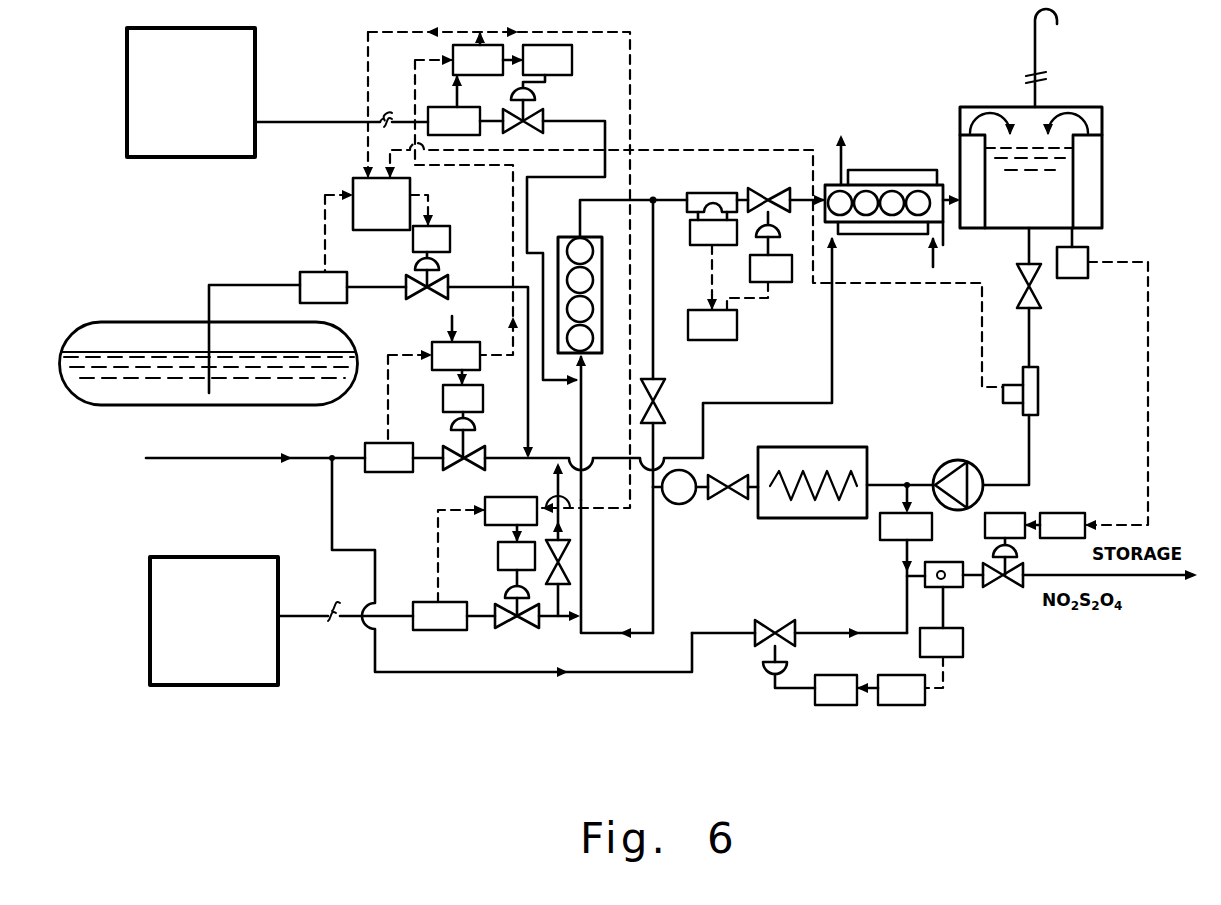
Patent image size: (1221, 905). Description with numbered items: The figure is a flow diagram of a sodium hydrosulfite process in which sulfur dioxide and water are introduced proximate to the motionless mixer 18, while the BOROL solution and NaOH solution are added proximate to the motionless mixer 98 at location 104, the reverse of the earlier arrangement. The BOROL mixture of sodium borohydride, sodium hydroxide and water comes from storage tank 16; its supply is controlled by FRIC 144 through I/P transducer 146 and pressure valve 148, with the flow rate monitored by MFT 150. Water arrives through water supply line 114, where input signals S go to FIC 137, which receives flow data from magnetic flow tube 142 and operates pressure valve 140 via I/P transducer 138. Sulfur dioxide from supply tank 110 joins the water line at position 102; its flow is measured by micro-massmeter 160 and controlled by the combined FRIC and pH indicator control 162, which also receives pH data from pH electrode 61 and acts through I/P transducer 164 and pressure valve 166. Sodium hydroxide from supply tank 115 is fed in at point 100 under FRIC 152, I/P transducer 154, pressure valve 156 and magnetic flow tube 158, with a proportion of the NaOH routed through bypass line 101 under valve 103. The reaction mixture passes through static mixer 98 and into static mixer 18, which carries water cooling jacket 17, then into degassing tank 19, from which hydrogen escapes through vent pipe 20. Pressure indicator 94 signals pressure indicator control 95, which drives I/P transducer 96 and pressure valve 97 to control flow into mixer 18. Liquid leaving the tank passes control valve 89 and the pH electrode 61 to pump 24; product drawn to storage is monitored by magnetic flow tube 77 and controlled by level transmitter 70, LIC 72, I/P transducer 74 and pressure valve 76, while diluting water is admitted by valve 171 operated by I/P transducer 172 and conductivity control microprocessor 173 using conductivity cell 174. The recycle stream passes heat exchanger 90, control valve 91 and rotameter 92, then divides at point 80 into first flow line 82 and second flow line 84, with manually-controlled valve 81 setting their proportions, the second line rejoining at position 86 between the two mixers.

The storage tank 16 is at (127, 97).
The water cooling jacket 17 is at (937, 170).
The static mixer 18 is at (867, 192).
The degassing tank 19 is at (1093, 184).
The vent pipe 20 is at (1033, 50).
The pump 24 is at (951, 455).
The pH electrode 61 is at (1038, 414).
The level transmitter 70 is at (1088, 256).
The LIC 72 is at (1068, 513).
The I/P transducer 74 is at (1006, 513).
The pressure valve 76 is at (998, 587).
The magnetic flow tube 77 is at (887, 543).
The point 80 is at (664, 493).
The manually-controlled valve 81 is at (660, 405).
The first flow line 82 is at (656, 578).
The second flow line 84 is at (656, 300).
The position 86 is at (654, 197).
The control valve 89 is at (1039, 292).
The heat exchanger 90 is at (812, 518).
The control valve 91 is at (722, 481).
The rotameter 92 is at (684, 504).
The pressure indicator 94 is at (706, 193).
The pressure indicator control 95 is at (735, 338).
The I/P transducer 96 is at (780, 282).
The pressure valve 97 is at (770, 188).
The static mixer 98 is at (567, 237).
The point 100 is at (584, 620).
The bypass line 101 is at (563, 598).
The position 102 is at (535, 460).
The valve 103 is at (570, 552).
The position 104 is at (583, 388).
The supply tank 110 is at (298, 405).
The water supply line 114 is at (243, 460).
The supply tank 115 is at (150, 635).
The FIC 137 is at (481, 368).
The I/P transducer 138 is at (483, 410).
The pressure valve 140 is at (458, 468).
The magnetic flow tube 142 is at (393, 472).
The FRIC 144 is at (484, 75).
The I/P transducer 146 is at (572, 60).
The pressure valve 148 is at (540, 113).
The MFT 150 is at (435, 107).
The FRIC 152 is at (494, 527).
The I/P transducer 154 is at (498, 566).
The pressure valve 156 is at (505, 625).
The magnetic flow tube 158 is at (438, 630).
The micro-massmeter 160 is at (347, 280).
The combined FRIC and pH indicator control 162 is at (353, 184).
The I/P transducer 164 is at (450, 238).
The pressure valve 166 is at (422, 297).
The valve 171 is at (795, 641).
The I/P transducer 172 is at (832, 705).
The conductivity control microprocessor 173 is at (902, 705).
The conductivity cell 174 is at (957, 588).